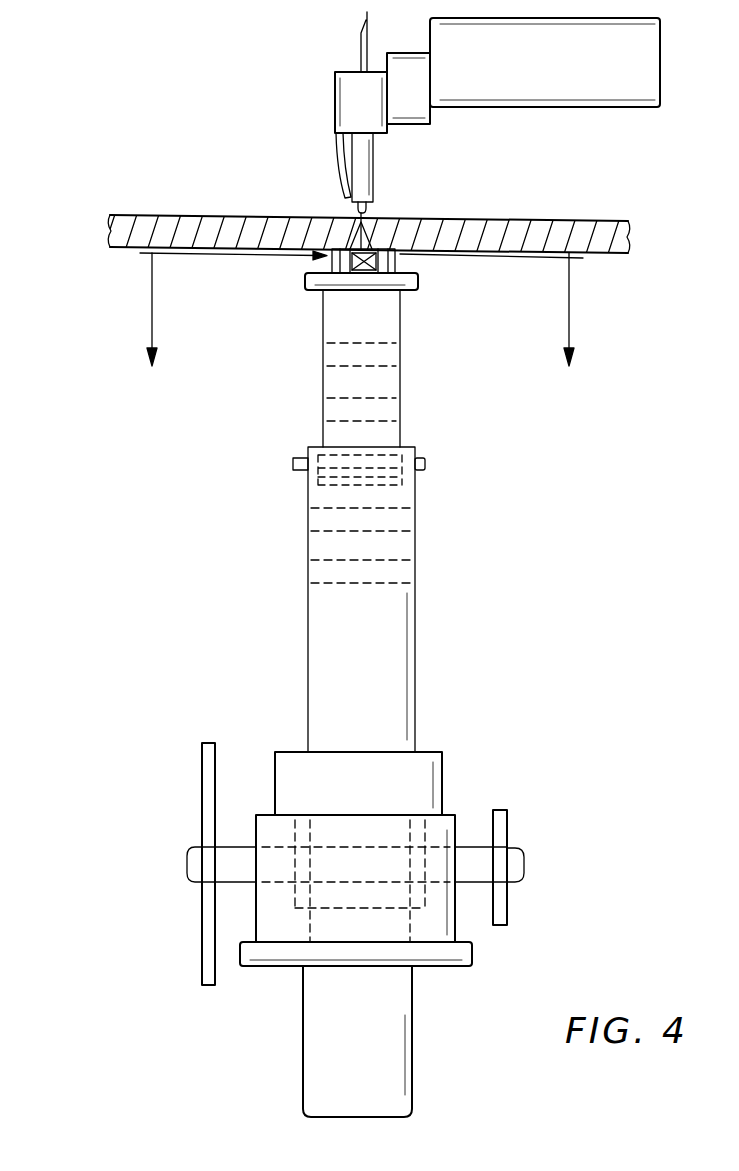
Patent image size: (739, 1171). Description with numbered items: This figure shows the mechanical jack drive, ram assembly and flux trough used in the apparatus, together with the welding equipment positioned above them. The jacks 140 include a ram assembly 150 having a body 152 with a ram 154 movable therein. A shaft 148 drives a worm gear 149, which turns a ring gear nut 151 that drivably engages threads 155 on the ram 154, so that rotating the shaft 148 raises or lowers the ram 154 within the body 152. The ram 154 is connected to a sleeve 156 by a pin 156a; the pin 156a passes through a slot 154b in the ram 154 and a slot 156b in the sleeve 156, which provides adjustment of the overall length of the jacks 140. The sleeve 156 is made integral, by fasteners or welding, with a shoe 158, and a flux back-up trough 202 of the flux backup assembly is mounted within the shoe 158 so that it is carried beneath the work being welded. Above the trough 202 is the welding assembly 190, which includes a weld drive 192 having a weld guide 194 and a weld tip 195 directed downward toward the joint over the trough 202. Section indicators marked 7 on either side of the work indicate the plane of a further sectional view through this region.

The section line 7- 7 is at (357, 308).
The welding assembly 190 is at (268, 74).
The weld drive 192 is at (375, 163).
The weld guide 194 is at (336, 152).
The weld tip 195 is at (364, 211).
The flux back-up trough 202 is at (316, 260).
The shoe 158 is at (418, 283).
The ram assembly 150 is at (458, 539).
The sleeve 156 is at (385, 380).
The pin 156a is at (425, 467).
The slot 156b is at (373, 452).
The ram 154 is at (323, 627).
The slot 154b is at (318, 472).
The jack 140 is at (165, 749).
The body 152 is at (430, 762).
The ring gear nut 151 is at (425, 905).
The worm gear 149 is at (363, 845).
The shaft 148 is at (186, 862).
The threads 155 is at (298, 958).